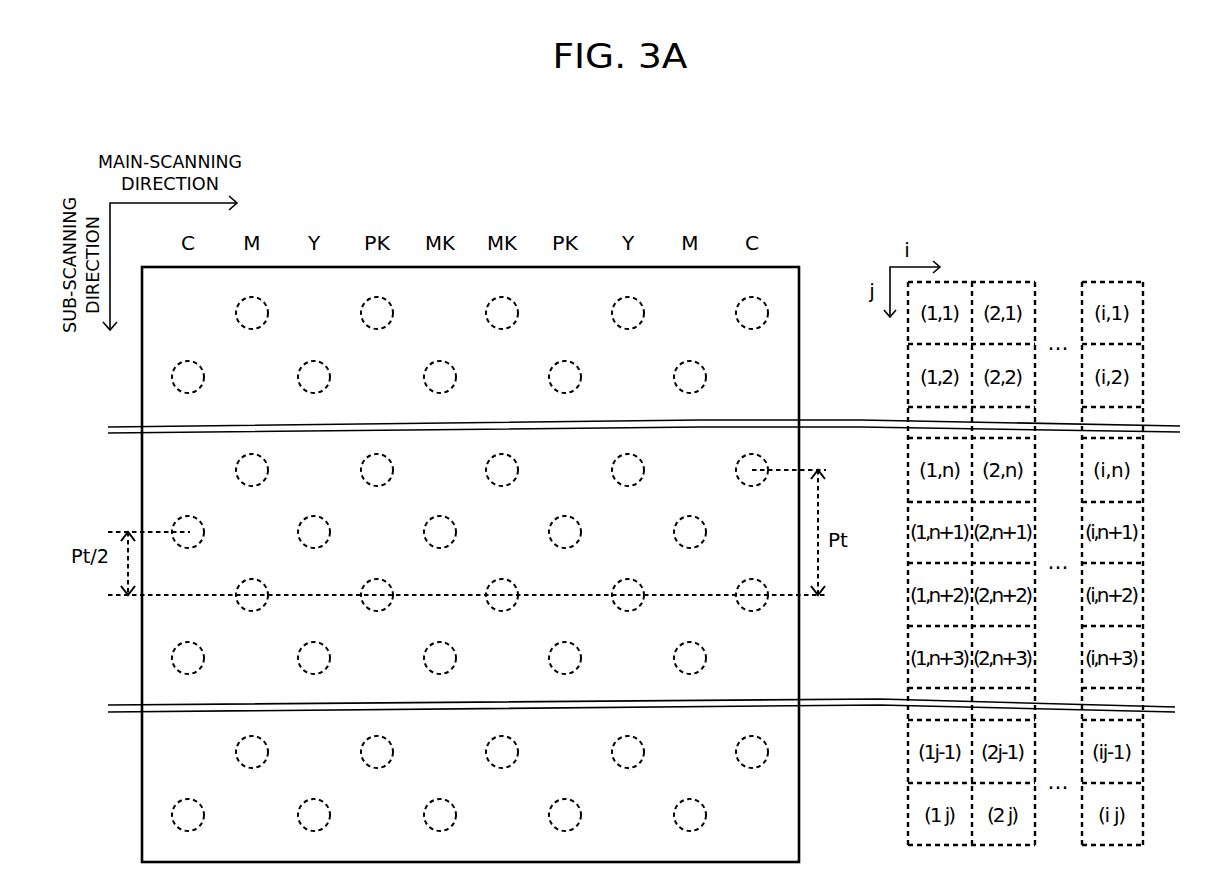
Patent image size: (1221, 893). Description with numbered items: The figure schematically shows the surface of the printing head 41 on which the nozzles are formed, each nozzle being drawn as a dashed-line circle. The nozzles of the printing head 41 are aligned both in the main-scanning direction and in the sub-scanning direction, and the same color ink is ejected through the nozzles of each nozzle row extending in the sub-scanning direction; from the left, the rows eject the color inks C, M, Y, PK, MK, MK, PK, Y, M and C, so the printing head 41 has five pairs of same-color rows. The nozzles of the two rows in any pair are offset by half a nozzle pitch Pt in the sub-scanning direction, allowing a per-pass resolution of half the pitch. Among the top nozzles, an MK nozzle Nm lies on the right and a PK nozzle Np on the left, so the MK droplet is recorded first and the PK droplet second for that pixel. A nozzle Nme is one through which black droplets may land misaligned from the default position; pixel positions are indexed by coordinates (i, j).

The printing head 41 is at (142, 773).
The PK nozzle Np is at (385, 298).
The MK nozzle Nm is at (510, 298).
The nozzle Nme is at (487, 611).